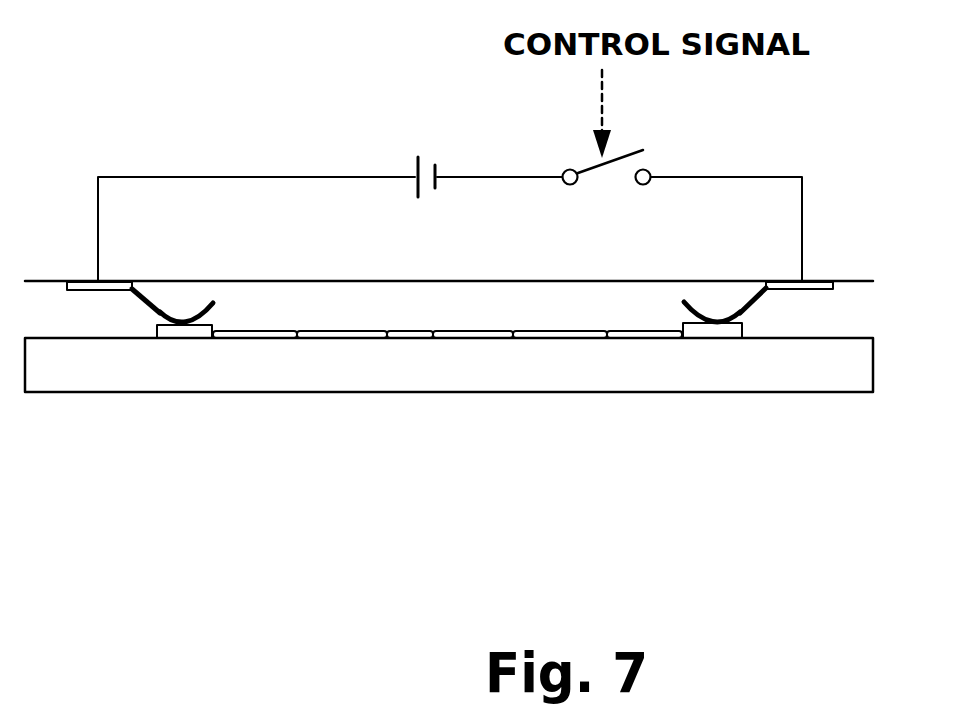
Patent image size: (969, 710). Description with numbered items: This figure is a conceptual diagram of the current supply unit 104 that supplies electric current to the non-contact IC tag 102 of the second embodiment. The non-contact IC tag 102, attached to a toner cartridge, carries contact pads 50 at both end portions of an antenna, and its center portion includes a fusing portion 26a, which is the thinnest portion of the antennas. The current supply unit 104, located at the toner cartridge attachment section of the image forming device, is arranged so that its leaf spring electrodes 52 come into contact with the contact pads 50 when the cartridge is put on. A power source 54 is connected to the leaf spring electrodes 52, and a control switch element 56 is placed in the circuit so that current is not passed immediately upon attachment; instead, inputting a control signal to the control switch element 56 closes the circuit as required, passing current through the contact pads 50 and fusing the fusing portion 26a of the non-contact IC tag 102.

The current supply unit 104 is at (774, 134).
The power source 54 is at (440, 157).
The control switch element 56 is at (620, 148).
The leaf spring electrodes 52 is at (108, 291).
The contact pads 50 is at (213, 321).
The fusing portion 26a is at (440, 329).
The non-contact IC tag 102 is at (758, 403).